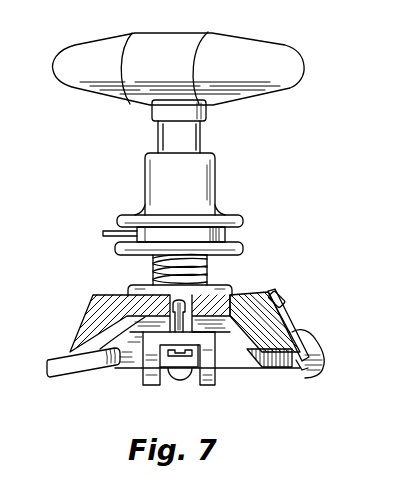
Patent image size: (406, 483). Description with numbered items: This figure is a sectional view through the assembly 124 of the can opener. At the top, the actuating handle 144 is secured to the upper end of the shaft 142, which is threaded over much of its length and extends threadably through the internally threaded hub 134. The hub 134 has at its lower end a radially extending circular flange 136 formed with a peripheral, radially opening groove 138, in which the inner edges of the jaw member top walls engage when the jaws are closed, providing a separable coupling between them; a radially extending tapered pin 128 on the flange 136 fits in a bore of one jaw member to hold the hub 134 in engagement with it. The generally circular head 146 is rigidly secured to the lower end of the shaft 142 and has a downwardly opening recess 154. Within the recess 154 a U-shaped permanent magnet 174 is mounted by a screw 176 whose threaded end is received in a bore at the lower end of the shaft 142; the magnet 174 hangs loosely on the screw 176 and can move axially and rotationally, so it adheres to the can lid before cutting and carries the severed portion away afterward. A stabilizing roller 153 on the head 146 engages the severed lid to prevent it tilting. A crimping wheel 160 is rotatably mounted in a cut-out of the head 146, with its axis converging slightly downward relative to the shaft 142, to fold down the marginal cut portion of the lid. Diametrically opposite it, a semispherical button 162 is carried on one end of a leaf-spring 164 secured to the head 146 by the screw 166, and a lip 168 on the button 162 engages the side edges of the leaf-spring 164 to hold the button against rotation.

The assembly 124 is at (140, 155).
The tapered pin 128 is at (113, 233).
The hub 134 is at (207, 190).
The flange 136 is at (243, 217).
The groove 138 is at (232, 234).
The shaft 142 is at (207, 272).
The actuating handle 144 is at (224, 42).
The head 146 is at (90, 307).
The stabilizing roller 153 is at (187, 372).
The recess 154 is at (135, 358).
The crimping wheel 160 is at (55, 366).
The button 162 is at (322, 374).
The leaf-spring 164 is at (293, 322).
The screw 166 is at (283, 295).
The lip 168 is at (302, 370).
The permanent magnet 174 is at (217, 380).
The screw 176 is at (207, 318).